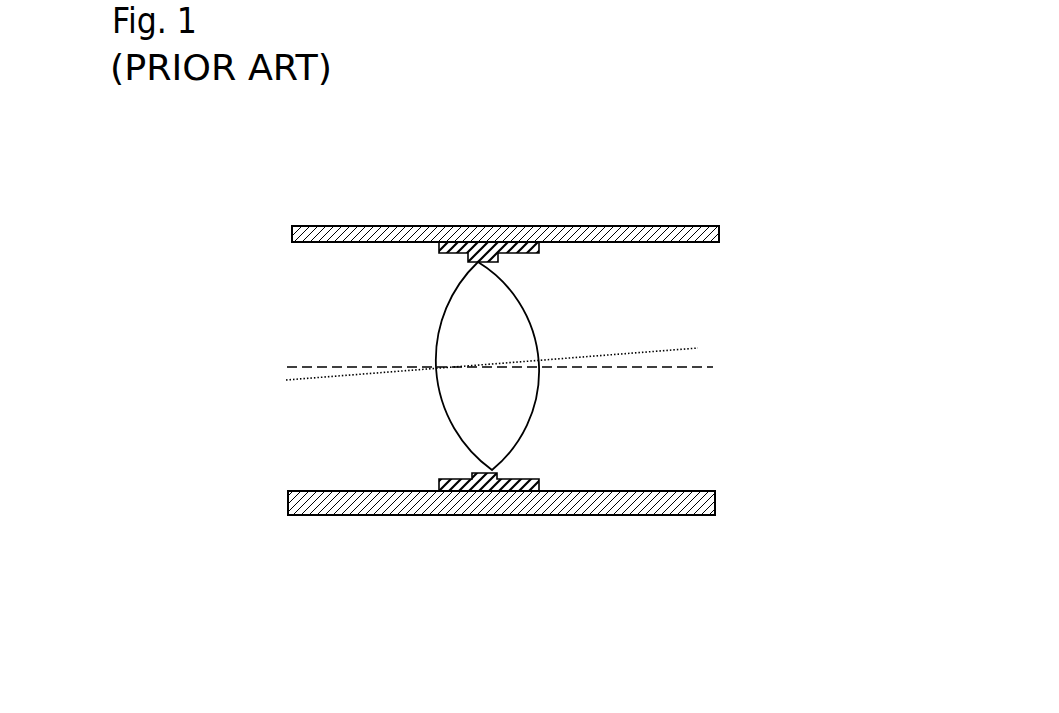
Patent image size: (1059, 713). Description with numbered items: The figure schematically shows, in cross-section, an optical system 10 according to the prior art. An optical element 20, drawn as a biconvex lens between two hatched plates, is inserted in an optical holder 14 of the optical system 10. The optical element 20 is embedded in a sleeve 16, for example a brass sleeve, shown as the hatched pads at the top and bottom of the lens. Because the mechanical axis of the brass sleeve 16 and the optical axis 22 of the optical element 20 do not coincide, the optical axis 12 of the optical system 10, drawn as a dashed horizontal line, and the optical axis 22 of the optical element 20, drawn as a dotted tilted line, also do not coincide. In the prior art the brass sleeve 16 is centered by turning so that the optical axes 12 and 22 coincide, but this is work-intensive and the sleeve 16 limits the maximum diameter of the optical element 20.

The optical system 10 is at (528, 152).
The optical axis of the optical system 12 is at (297, 366).
The optical holder 14 is at (688, 225).
The sleeve 16 is at (468, 225).
The optical element 20 is at (530, 417).
The optical axis of the optical element 22 is at (678, 348).